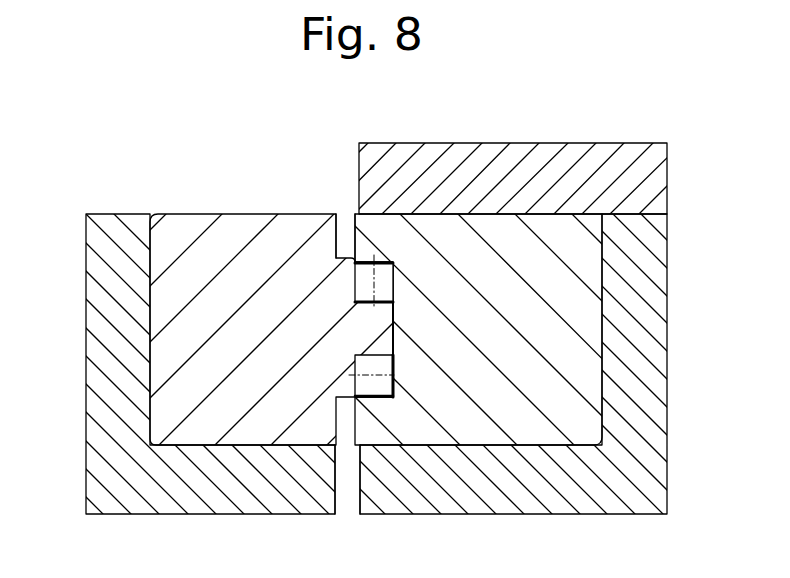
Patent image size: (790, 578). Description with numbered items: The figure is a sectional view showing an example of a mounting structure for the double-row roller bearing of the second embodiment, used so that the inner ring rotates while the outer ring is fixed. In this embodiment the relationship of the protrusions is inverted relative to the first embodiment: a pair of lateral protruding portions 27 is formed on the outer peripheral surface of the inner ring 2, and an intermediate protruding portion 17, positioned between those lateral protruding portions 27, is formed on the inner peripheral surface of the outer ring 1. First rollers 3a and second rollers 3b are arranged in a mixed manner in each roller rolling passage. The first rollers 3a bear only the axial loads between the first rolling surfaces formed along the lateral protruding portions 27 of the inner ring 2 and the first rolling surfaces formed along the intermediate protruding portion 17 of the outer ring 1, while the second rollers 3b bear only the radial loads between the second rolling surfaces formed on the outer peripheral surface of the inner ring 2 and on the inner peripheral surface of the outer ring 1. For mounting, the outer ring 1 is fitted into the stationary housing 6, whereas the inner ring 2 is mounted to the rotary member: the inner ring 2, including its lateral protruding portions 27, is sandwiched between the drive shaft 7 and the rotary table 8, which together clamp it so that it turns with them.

The outer ring 1 is at (213, 253).
The inner ring 2 is at (556, 228).
The first rollers 3a is at (383, 291).
The second rollers 3b is at (383, 372).
The stationary housing 6 is at (108, 383).
The drive shaft 7 is at (650, 408).
The rotary table 8 is at (487, 165).
The intermediate protruding portion 17 is at (384, 340).
The lateral protruding portions 27 is at (372, 228).